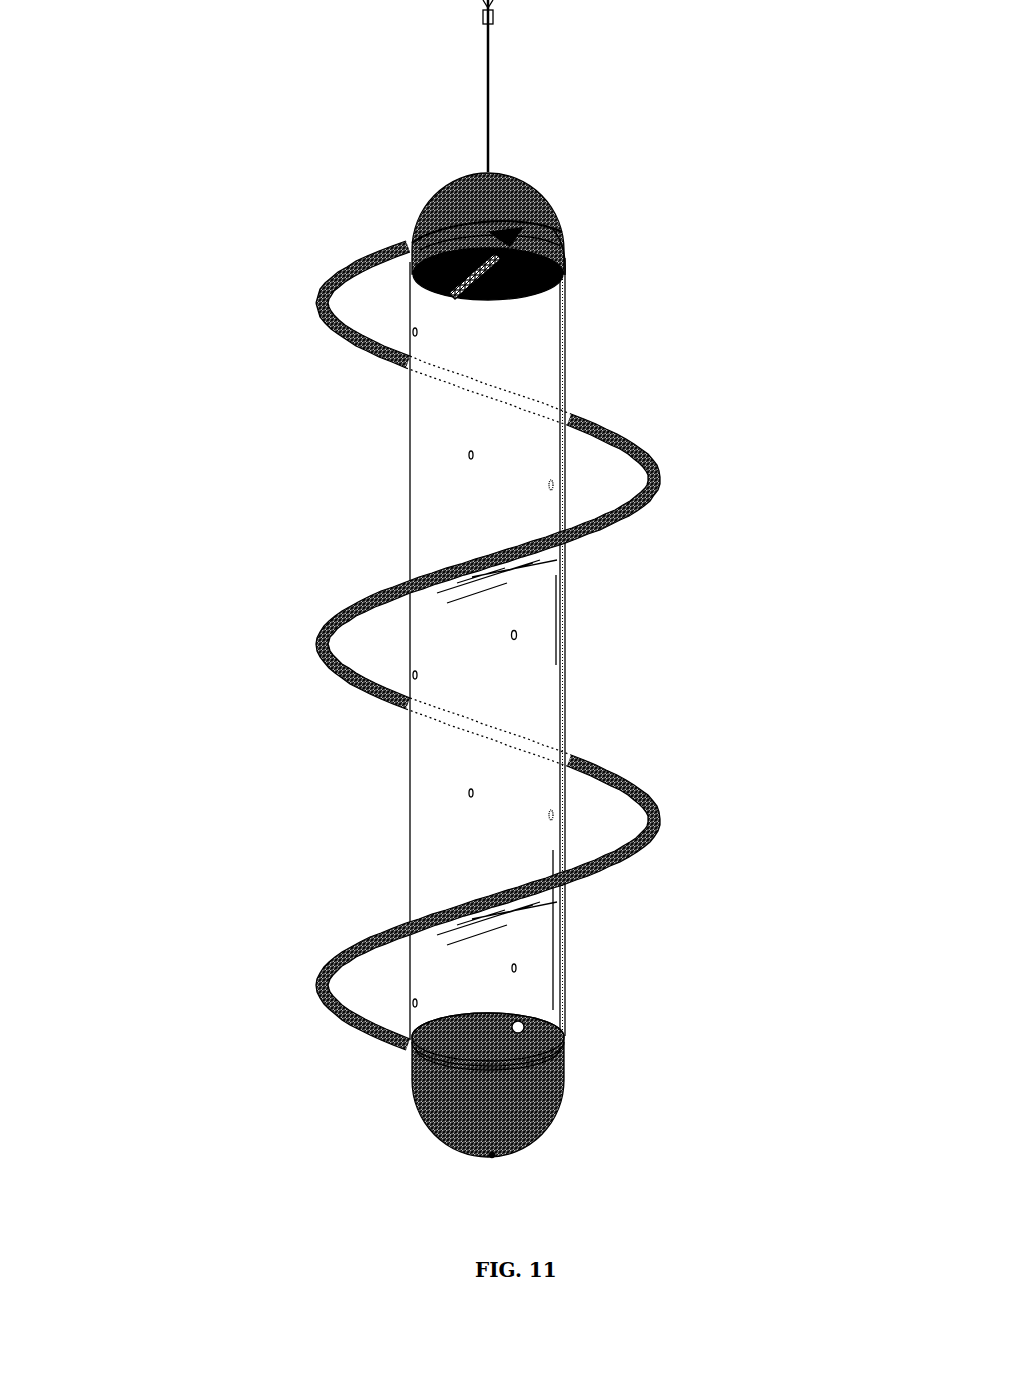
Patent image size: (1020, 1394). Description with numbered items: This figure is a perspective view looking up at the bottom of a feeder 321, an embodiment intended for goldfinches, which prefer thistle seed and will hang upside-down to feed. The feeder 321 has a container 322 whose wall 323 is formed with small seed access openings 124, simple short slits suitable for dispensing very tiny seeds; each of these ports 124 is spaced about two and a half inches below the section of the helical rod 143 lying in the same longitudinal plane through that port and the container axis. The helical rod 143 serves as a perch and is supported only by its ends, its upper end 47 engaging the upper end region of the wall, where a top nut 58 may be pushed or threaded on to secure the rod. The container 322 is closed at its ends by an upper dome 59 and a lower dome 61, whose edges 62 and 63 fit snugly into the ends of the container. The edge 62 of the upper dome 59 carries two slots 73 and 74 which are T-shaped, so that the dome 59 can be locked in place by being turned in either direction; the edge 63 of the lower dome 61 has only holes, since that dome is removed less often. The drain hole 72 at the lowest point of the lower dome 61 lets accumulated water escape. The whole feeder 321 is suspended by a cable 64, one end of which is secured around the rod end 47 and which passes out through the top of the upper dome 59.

The cable 64 is at (483, 70).
The feeder 321 is at (474, 636).
The edge of upper dome 62 is at (412, 233).
The upper dome 59 is at (517, 170).
The slot 73 is at (563, 253).
The slot 74 is at (468, 302).
The upper end of helical rod 47 is at (533, 300).
The helical rod 143 is at (600, 427).
The wall 323 is at (410, 392).
The seed access openings 124 is at (518, 636).
The container 322 is at (582, 712).
The top nut 58 is at (598, 1002).
The edge of lower dome 63 is at (372, 1044).
The lower dome 61 is at (460, 1157).
The drain hole 72 is at (494, 1158).